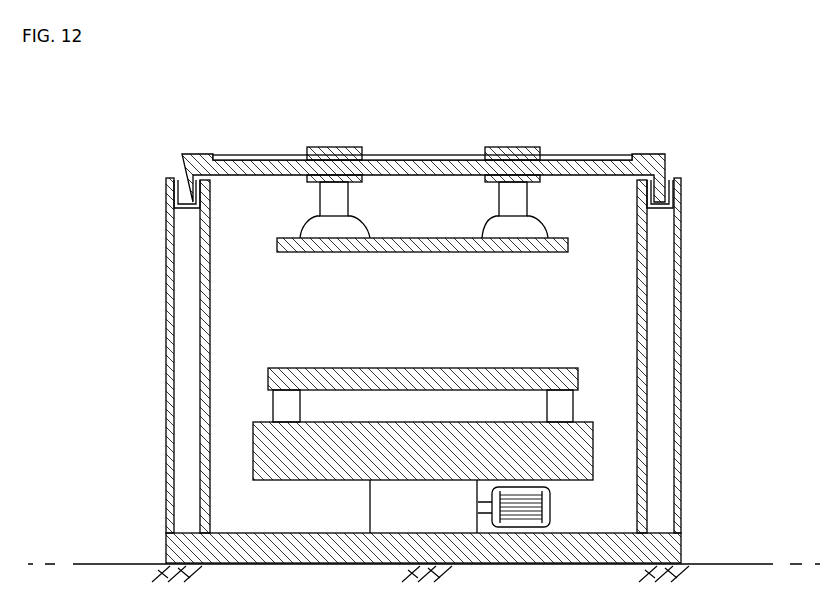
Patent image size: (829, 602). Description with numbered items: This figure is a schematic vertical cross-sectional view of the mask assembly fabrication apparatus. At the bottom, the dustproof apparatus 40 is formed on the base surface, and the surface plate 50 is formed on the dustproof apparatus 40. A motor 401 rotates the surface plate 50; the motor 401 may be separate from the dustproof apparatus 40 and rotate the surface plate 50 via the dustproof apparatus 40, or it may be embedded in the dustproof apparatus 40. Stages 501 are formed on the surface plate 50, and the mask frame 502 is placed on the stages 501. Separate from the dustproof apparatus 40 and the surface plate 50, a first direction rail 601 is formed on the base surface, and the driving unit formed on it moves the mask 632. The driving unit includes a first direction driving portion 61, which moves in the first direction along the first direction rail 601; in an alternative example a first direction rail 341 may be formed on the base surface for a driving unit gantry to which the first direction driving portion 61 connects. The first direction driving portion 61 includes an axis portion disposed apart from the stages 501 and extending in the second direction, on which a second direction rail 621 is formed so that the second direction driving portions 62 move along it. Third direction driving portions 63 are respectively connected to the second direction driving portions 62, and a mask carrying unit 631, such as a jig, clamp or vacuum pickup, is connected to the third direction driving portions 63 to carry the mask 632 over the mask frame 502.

The dustproof apparatus 40 is at (378, 515).
The motor 401 is at (540, 508).
The surface plate 50 is at (282, 467).
The stages 501 is at (556, 408).
The mask frame 502 is at (472, 372).
The first direction driving portion 61 is at (667, 165).
The second direction driving portions 62 is at (516, 150).
The second direction rail 621 is at (424, 155).
The third direction driving portions 63 is at (333, 200).
The mask carrying unit 631 is at (317, 230).
The mask 632 is at (405, 246).
The first direction rail 601 is at (681, 278).
The first direction rail 341 is at (660, 205).